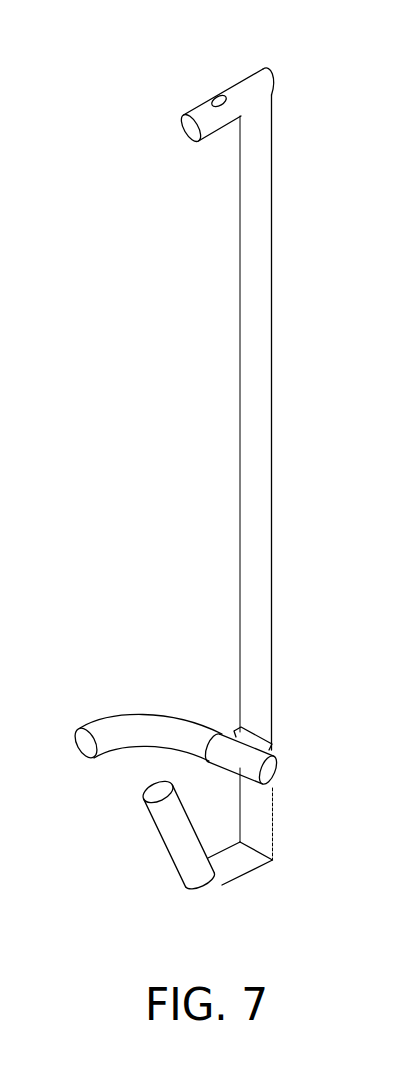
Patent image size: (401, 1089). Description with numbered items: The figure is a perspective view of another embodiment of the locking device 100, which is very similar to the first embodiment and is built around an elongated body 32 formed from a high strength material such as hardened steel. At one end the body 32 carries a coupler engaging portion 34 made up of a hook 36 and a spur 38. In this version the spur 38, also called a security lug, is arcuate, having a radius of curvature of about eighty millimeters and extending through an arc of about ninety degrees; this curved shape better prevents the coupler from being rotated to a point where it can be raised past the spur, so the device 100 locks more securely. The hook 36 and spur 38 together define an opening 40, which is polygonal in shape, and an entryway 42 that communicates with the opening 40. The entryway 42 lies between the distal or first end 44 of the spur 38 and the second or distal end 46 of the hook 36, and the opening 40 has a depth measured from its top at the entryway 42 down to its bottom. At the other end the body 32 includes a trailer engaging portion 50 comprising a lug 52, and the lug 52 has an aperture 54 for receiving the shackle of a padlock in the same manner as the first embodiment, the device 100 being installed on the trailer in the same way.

The locking device embodiment 100 is at (115, 407).
The elongated body 32 is at (260, 467).
The coupler engaging portion 34 is at (123, 907).
The hook 36 is at (173, 833).
The spur 38 is at (158, 716).
The opening 40 is at (227, 803).
The entryway 42 is at (128, 758).
The first end of the spur 44 is at (77, 744).
The distal end of the hook 46 is at (152, 790).
The trailer engaging portion 50 is at (155, 127).
The lug 52 is at (246, 84).
The aperture 54 is at (212, 97).